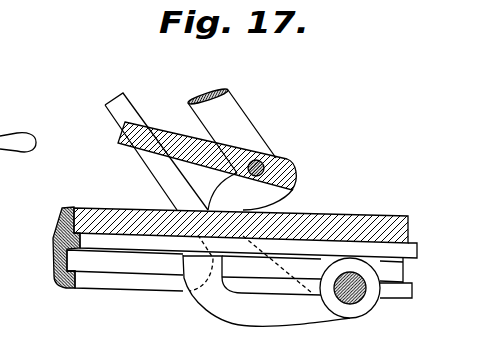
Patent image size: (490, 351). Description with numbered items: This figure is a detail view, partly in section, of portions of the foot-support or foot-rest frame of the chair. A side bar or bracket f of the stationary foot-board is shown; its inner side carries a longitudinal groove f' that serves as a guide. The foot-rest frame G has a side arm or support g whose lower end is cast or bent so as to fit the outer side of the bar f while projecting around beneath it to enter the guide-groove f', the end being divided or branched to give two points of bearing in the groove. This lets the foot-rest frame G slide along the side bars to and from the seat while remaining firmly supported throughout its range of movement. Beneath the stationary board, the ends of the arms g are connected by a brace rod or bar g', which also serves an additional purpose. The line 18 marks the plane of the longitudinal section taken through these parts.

The section line 18 18 is at (53, 249).
The foot-rest frame G is at (207, 144).
The block E is at (156, 213).
The side bar or bracket f is at (54, 247).
The longitudinal groove f' is at (235, 266).
The side arm or support g is at (266, 280).
The brace rod or bar g' is at (360, 291).